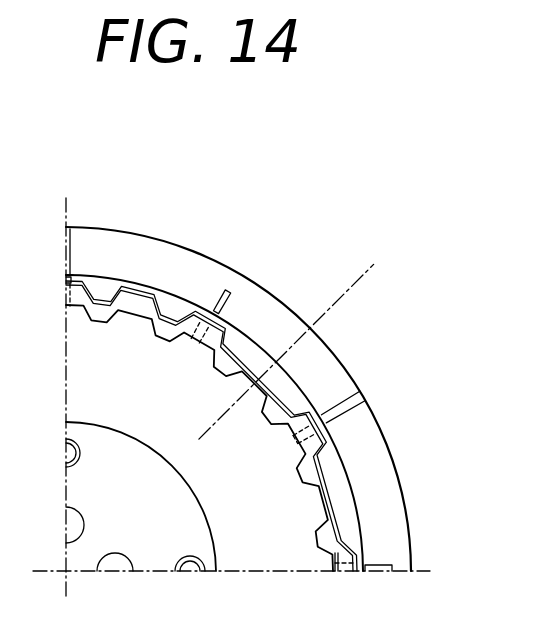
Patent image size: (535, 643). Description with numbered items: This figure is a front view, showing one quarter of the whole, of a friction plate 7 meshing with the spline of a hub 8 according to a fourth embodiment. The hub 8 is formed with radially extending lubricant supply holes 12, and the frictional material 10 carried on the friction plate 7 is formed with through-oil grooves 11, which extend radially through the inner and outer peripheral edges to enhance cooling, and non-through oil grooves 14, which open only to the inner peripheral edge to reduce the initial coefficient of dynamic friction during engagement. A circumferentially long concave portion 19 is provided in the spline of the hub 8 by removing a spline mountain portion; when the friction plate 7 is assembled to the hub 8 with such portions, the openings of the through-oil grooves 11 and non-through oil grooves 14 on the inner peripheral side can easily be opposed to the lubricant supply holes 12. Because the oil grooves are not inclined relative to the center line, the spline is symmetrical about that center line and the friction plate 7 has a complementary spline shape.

The friction plate 7 is at (261, 374).
The hub 8 is at (288, 550).
The frictional material 10 is at (399, 508).
The through-oil grooves 11 is at (362, 399).
The lubricant supply holes 12 is at (304, 441).
The non-through oil grooves 14 is at (240, 290).
The circumferentially long concave portion 19 is at (273, 392).